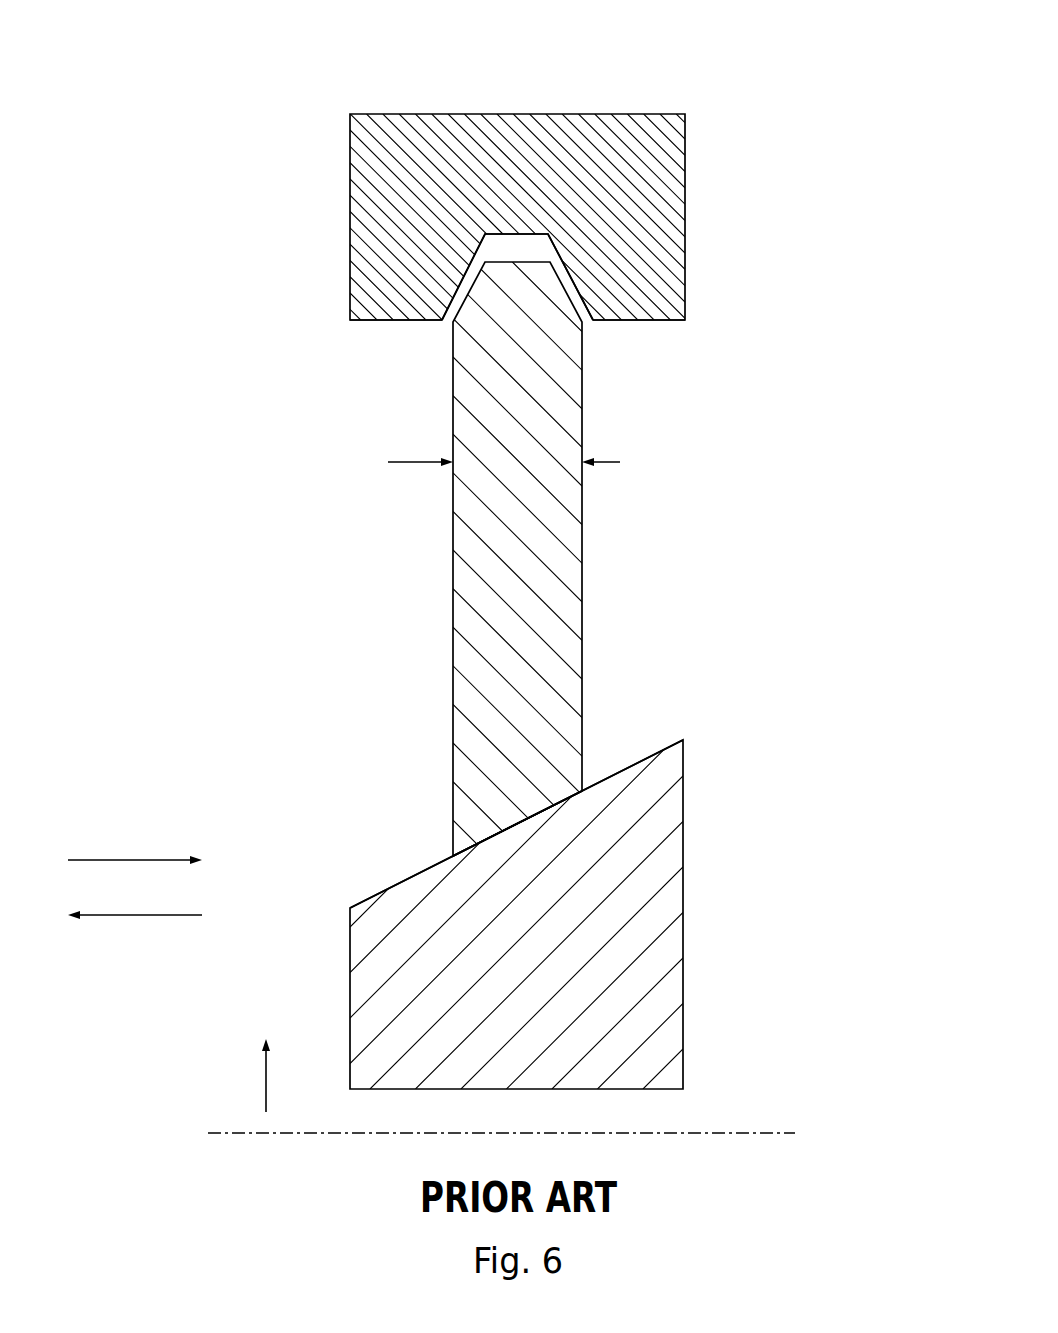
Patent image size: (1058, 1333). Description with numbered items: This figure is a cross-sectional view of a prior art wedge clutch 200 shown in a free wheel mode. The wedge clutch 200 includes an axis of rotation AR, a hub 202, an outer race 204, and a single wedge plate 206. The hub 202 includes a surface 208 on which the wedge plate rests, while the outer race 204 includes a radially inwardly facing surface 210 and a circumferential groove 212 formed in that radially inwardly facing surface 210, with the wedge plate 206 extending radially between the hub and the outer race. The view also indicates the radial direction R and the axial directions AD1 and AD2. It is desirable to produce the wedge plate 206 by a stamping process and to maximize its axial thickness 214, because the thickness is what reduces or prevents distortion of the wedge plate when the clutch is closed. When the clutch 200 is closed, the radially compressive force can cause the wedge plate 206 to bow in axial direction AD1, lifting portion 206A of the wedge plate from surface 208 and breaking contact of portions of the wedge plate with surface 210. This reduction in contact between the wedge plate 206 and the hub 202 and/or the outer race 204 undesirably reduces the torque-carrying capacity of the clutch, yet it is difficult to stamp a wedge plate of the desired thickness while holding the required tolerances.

The wedge clutch 200 is at (778, 46).
The hub 202 is at (698, 892).
The outer race 204 is at (697, 180).
The single wedge plate 206 is at (468, 610).
The portion of the wedge plate 206A is at (541, 812).
The surface 208 is at (400, 884).
The radially inwardly facing surface 210 is at (653, 320).
The circumferential groove 212 is at (466, 268).
The axial thickness 214 is at (428, 460).
The axial direction AD1 is at (133, 915).
The axial direction AD2 is at (110, 860).
The radial direction R is at (266, 1067).
The axis of rotation AR is at (765, 1133).